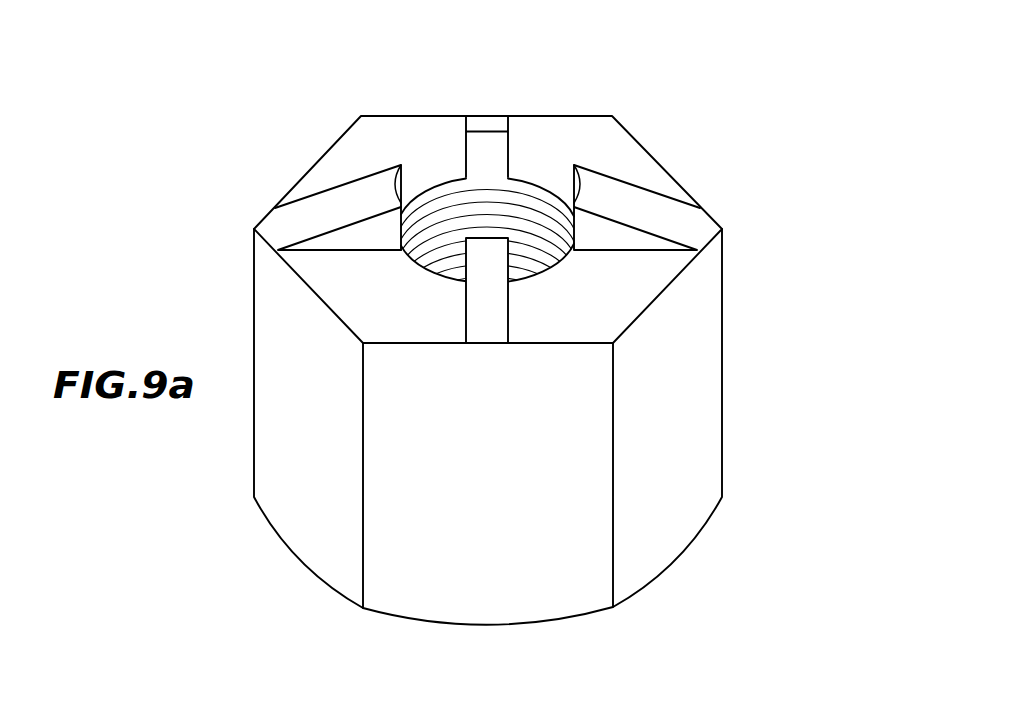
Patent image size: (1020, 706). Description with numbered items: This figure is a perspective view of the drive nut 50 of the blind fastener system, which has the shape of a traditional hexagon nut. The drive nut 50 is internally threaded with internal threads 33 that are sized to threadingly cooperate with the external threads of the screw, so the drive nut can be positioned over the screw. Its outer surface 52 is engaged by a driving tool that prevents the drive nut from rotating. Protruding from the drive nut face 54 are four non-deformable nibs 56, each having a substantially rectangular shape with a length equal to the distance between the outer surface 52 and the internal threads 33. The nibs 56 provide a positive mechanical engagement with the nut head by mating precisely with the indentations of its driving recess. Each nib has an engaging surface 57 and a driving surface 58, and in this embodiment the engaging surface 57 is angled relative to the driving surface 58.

The internal threads 33 is at (447, 198).
The drive nut 50 is at (542, 370).
The outer surface 52 is at (672, 503).
The drive nut face 54 is at (582, 133).
The nibs 56 is at (640, 207).
The engaging surface 57 is at (320, 213).
The driving surface 58 is at (365, 237).